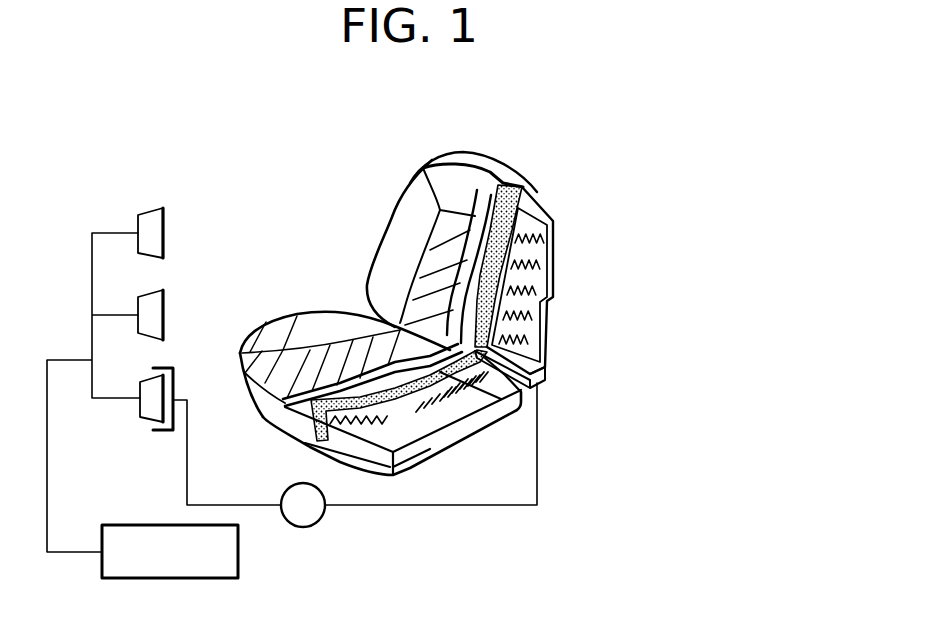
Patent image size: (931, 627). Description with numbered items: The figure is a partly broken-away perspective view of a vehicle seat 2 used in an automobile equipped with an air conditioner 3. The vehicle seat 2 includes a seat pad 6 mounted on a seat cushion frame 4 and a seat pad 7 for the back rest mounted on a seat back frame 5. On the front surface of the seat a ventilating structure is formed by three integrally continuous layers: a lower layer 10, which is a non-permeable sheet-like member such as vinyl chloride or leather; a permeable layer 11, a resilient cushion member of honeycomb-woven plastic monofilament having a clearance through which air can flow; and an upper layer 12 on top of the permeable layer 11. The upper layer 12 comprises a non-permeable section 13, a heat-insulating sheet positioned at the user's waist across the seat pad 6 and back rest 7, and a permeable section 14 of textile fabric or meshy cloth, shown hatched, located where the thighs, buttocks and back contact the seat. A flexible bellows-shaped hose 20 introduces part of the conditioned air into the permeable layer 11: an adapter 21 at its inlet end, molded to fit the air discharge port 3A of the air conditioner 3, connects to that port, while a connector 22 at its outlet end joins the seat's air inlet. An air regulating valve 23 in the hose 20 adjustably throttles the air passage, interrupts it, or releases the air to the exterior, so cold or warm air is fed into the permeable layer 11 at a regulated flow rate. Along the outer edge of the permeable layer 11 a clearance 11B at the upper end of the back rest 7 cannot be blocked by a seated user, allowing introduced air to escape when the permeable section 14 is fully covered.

The vehicle seat 2 is at (128, 156).
The air conditioner 3 is at (238, 550).
The air discharge port 3A is at (128, 440).
The seat cushion frame 4 is at (337, 452).
The seat back frame 5 is at (550, 290).
The seat pad 6 is at (285, 408).
The seat pad for back rest 7 is at (527, 190).
The lower layer 10 is at (515, 217).
The permeable layer 11 is at (525, 252).
The clearance 11B is at (500, 148).
The upper layer 12 is at (318, 139).
The non-permeable section 13 is at (397, 330).
The permeable section 14 is at (308, 352).
The hose 20 is at (539, 480).
The adapter 21 is at (177, 383).
The connector 22 is at (547, 378).
The air regulating valve 23 is at (318, 521).